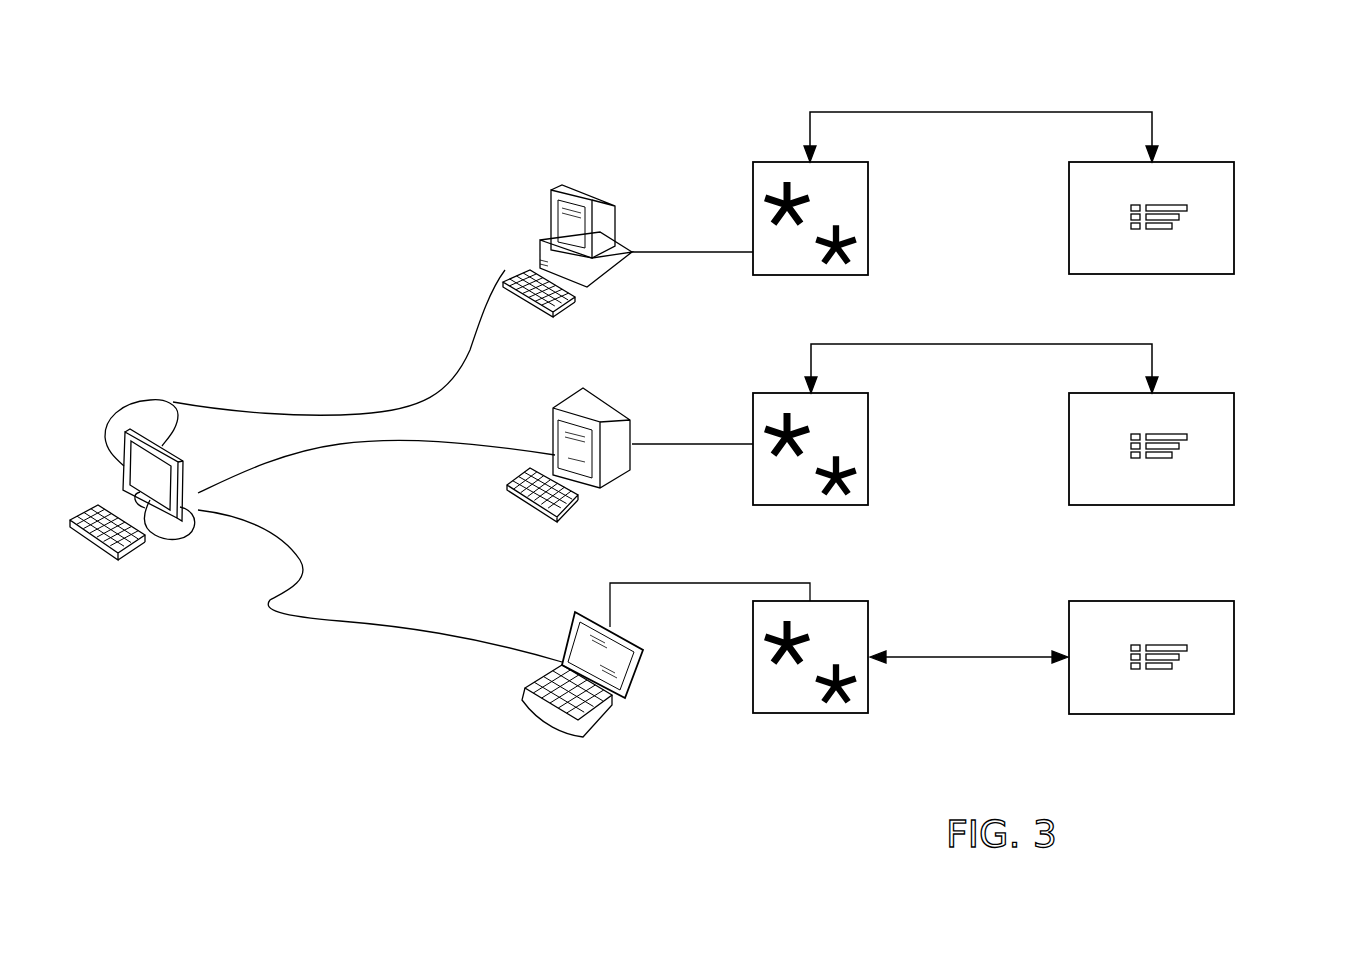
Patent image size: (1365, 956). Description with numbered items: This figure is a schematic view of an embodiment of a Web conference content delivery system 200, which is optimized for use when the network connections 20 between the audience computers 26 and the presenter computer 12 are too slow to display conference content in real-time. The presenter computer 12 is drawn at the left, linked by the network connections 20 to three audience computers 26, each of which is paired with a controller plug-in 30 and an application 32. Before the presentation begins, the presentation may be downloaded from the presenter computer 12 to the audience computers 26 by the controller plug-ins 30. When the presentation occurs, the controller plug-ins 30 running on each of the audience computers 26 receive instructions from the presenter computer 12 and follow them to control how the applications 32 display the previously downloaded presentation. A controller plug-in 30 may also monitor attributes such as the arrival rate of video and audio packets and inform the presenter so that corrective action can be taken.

The Web conference content delivery system 200 is at (412, 165).
The presenter computer 12 is at (150, 400).
The network connections 20 is at (366, 442).
The audience computers 26 is at (578, 190).
The controller plug-ins 30 is at (753, 162).
The applications 32 is at (1234, 215).